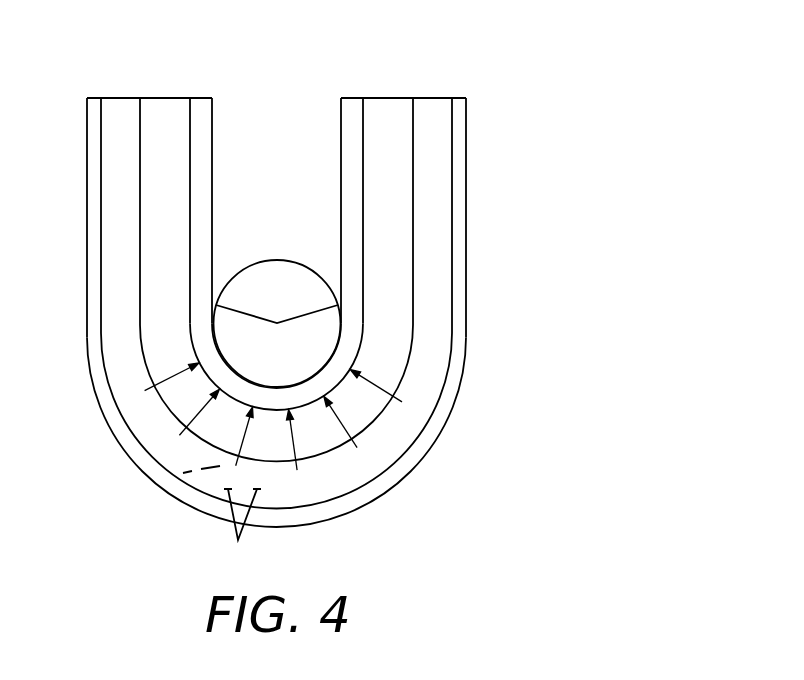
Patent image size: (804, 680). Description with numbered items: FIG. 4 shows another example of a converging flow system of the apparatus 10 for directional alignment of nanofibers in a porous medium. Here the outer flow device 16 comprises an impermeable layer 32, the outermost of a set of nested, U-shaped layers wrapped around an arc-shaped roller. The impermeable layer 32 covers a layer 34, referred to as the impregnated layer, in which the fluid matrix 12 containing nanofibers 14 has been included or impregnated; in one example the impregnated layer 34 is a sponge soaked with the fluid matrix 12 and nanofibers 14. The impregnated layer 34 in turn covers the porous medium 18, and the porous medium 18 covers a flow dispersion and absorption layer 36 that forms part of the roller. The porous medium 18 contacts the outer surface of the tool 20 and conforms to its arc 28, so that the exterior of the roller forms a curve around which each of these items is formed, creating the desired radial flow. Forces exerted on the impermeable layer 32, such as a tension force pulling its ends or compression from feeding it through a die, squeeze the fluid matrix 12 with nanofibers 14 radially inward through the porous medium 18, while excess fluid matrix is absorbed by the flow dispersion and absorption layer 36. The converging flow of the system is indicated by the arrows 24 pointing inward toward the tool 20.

The apparatus 10 is at (458, 40).
The fluid matrix 12 is at (211, 467).
The nanofibers 14 is at (242, 532).
The outer flow device 16 is at (388, 502).
The porous medium 18 is at (157, 190).
The tool 20 is at (277, 250).
The arrows 24 is at (152, 392).
The arc 28 is at (213, 323).
The impermeable layer 32 is at (430, 448).
The impregnated layer 34 is at (148, 428).
The flow dispersion and absorption layer 36 is at (202, 123).